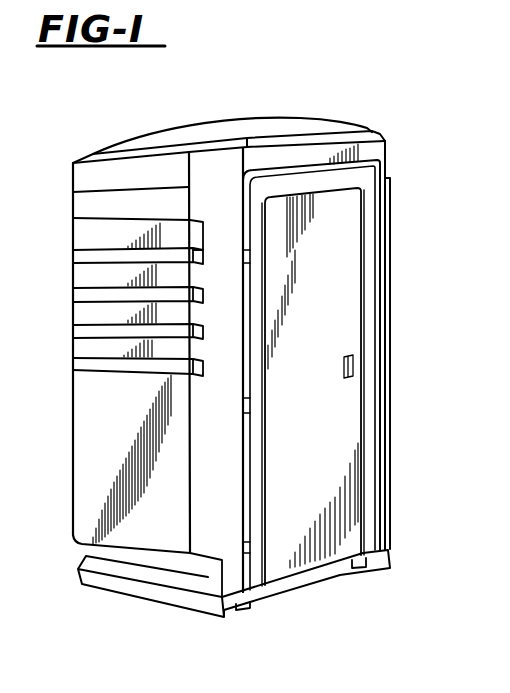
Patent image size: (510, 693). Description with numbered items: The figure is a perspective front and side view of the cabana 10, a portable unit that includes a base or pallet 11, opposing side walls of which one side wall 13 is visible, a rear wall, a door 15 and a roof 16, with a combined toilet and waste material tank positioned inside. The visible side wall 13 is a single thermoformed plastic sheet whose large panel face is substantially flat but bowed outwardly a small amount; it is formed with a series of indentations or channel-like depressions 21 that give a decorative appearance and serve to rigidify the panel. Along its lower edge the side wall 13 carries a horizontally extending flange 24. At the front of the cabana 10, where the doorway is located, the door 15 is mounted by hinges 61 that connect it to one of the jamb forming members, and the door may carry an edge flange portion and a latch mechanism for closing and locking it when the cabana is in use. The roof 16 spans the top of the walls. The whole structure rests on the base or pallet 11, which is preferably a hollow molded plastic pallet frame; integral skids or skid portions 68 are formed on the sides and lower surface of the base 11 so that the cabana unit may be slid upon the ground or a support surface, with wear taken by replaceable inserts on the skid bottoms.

The cabana 10 is at (392, 328).
The base or pallet 11 is at (341, 570).
The side wall 13 is at (114, 483).
The door 15 is at (347, 422).
The roof 16 is at (290, 118).
The indentations or channel-like depressions 21 is at (110, 220).
The lower edge horizontally extending flange 24 is at (172, 577).
The hinges 61 is at (249, 257).
The skids or skid portions 68 is at (240, 597).